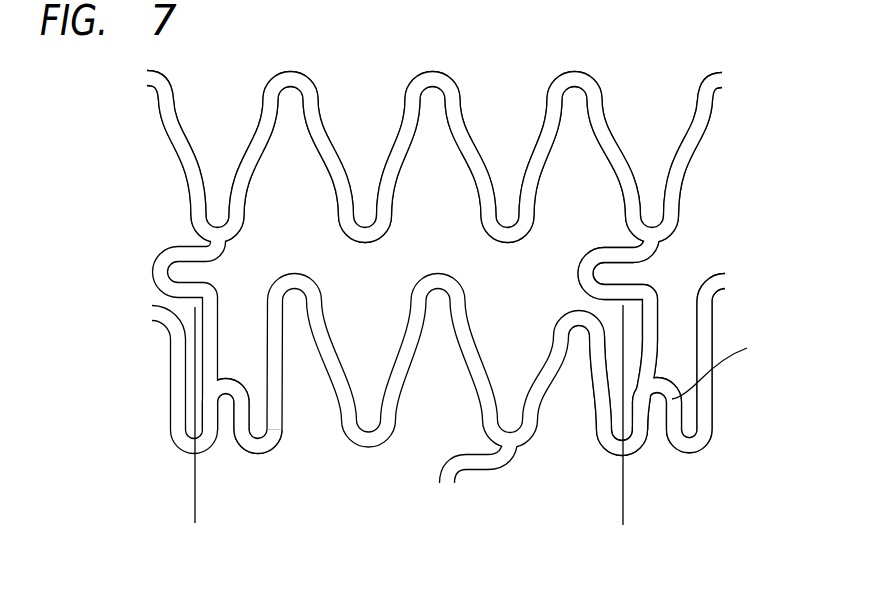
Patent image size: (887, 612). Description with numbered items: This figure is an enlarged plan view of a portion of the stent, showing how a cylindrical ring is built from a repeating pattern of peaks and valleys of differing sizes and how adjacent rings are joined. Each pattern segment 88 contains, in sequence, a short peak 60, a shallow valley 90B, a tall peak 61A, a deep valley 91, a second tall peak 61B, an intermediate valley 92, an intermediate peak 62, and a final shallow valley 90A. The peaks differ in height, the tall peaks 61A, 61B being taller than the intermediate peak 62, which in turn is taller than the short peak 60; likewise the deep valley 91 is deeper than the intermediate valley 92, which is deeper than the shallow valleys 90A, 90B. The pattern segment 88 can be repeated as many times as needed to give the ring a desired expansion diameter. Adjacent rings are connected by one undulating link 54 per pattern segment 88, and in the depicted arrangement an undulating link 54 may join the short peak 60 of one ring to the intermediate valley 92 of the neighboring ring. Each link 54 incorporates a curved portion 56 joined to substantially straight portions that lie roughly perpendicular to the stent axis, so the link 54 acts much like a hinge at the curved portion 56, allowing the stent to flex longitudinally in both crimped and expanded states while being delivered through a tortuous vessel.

The undulating link 54 is at (225, 298).
The curved portion 56 is at (586, 248).
The short peak 60 is at (238, 383).
The tall peak 61A is at (293, 271).
The tall peak 61B is at (437, 270).
The intermediate peak 62 is at (575, 311).
The pattern segment 88 is at (623, 507).
The shallow valley 90A is at (623, 449).
The shallow valley 90B is at (258, 438).
The deep valley 91 is at (369, 431).
The intermediate valley 92 is at (222, 226).